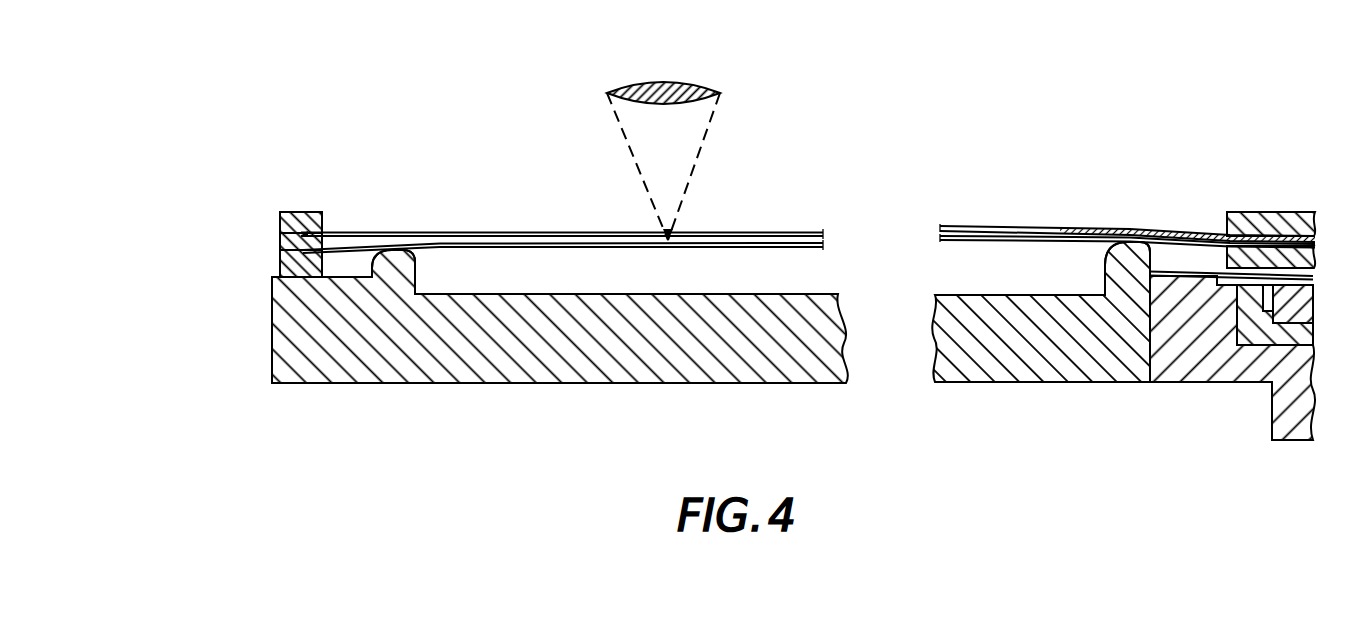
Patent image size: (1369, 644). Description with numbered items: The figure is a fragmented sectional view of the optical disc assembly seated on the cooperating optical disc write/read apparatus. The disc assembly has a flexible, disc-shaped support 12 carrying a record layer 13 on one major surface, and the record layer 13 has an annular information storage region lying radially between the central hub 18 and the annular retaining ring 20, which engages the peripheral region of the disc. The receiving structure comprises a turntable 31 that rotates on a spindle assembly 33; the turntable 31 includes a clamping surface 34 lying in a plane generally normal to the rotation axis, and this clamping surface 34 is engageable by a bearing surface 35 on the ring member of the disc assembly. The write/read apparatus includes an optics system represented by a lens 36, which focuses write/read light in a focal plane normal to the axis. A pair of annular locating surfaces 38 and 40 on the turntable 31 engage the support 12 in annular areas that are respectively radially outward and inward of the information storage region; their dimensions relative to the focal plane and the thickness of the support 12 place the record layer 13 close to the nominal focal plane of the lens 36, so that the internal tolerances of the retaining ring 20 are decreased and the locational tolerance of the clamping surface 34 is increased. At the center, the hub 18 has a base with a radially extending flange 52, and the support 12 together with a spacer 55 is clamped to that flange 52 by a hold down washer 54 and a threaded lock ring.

The support 12 is at (966, 242).
The record layer 13 is at (1019, 234).
The central hub 18 is at (1244, 192).
The annular retaining ring 20 is at (268, 209).
The turntable 31 is at (621, 378).
The spindle assembly 33 is at (1238, 411).
The clamping surface 34 is at (348, 277).
The bearing surface 35 is at (288, 278).
The lens 36 is at (637, 82).
The annular locating surface 38 is at (420, 258).
The annular locating surface 40 is at (1108, 258).
The radially extending flange 52 is at (1312, 261).
The hold down washer 54 is at (1303, 214).
The spacer 55 is at (1176, 230).